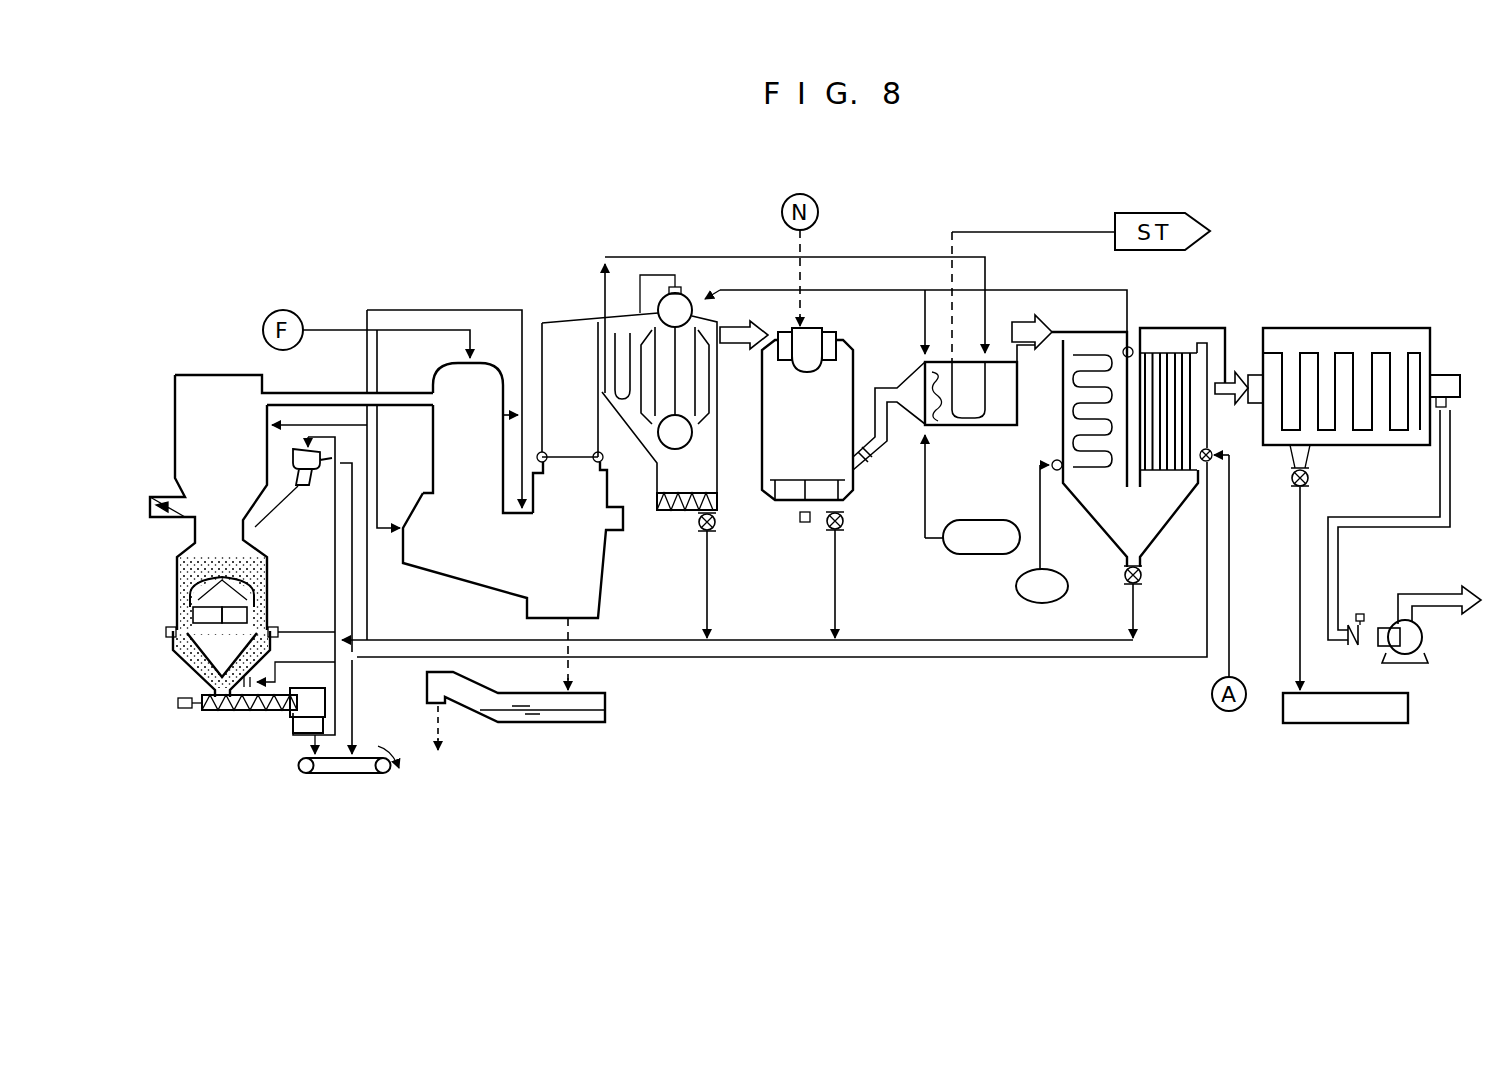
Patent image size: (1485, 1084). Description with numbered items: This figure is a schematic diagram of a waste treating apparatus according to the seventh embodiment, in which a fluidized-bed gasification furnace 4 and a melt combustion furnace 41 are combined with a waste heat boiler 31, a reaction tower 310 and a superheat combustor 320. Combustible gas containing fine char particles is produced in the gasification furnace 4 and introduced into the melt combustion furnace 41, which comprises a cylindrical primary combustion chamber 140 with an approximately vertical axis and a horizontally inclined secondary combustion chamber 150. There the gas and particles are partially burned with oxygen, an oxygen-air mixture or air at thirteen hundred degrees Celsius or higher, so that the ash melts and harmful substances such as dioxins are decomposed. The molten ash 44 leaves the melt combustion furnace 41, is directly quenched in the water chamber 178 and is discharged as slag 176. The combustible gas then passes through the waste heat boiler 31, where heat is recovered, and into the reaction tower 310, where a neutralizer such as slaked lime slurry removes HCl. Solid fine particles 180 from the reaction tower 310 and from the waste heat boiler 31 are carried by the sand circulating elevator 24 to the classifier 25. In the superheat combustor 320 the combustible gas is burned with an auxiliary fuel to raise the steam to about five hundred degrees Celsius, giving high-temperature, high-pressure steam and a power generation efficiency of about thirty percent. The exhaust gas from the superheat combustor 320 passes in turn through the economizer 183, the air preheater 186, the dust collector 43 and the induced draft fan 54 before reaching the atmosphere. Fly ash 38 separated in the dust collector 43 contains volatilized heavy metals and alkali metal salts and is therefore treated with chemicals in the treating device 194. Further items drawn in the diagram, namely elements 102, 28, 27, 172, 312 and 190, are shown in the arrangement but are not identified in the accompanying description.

The gasification furnace 4 is at (193, 365).
The combustion chamber 102 is at (247, 443).
The classifier 25 is at (251, 530).
The sand circulating elevator 24 is at (335, 586).
The pipe 28 is at (356, 704).
The screw conveyor 27 is at (313, 741).
The conveyor 172 is at (356, 777).
The melt combustion furnace 41 is at (420, 484).
The primary combustion chamber 140 is at (494, 449).
The secondary combustion chamber 150 is at (505, 564).
The waste heat boiler 31 is at (664, 252).
The solid fine particles 180 is at (706, 587).
The reaction tower 310 is at (843, 483).
The discharge line 312 is at (834, 599).
The superheat combustor 320 is at (1000, 432).
The economizer 183 is at (1123, 500).
The air preheater 186 is at (1201, 447).
The discharge line 190 is at (1137, 601).
The dust collector 43 is at (1386, 334).
The fly ash 38 is at (1298, 602).
The treating device 194 is at (1310, 725).
The induced draft fan 54 is at (1424, 640).
The molten ash 44 is at (572, 675).
The water chamber 178 is at (568, 718).
The slag 176 is at (445, 720).